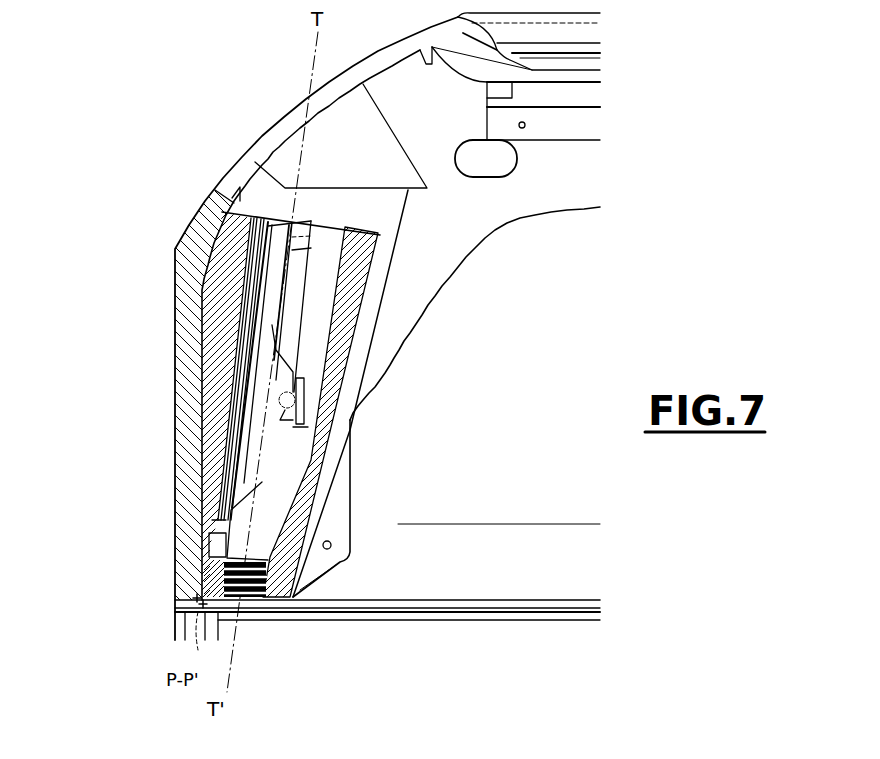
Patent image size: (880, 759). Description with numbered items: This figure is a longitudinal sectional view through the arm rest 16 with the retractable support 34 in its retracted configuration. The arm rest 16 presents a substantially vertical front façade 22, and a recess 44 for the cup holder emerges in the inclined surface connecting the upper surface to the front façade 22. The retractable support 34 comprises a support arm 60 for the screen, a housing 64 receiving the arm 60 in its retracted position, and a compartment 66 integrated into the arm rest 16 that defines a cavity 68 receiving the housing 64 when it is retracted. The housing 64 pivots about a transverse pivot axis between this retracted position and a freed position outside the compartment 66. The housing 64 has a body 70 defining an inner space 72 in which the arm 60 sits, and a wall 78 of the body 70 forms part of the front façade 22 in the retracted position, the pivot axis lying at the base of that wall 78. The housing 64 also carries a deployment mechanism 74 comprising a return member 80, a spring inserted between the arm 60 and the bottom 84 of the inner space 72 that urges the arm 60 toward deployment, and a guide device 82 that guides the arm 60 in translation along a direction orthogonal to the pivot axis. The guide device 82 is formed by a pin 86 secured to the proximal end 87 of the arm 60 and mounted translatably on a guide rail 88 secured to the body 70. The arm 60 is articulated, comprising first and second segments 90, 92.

The arm rest 16 is at (243, 113).
The front façade 22 is at (177, 372).
The retractable support 34 is at (150, 486).
The recess 44 is at (348, 115).
The support arm 60 is at (275, 453).
The housing 64 is at (170, 320).
The compartment 66 is at (402, 263).
The cavity 68 is at (393, 233).
The body 70 is at (360, 290).
The inner space 72 is at (327, 237).
The deployment mechanism 74 is at (200, 603).
The wall 78 is at (180, 420).
The return member 80 is at (297, 590).
The guide device 82 is at (205, 522).
The bottom 84 is at (245, 600).
The pin 86 is at (205, 580).
The proximal end 87 is at (262, 517).
The guide rail 88 is at (250, 283).
The first segment 90 is at (262, 482).
The second segment 92 is at (272, 327).